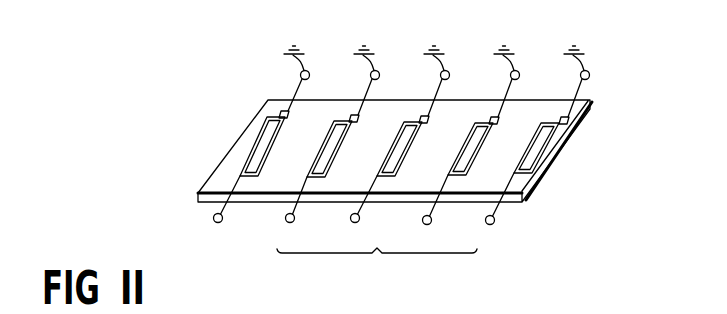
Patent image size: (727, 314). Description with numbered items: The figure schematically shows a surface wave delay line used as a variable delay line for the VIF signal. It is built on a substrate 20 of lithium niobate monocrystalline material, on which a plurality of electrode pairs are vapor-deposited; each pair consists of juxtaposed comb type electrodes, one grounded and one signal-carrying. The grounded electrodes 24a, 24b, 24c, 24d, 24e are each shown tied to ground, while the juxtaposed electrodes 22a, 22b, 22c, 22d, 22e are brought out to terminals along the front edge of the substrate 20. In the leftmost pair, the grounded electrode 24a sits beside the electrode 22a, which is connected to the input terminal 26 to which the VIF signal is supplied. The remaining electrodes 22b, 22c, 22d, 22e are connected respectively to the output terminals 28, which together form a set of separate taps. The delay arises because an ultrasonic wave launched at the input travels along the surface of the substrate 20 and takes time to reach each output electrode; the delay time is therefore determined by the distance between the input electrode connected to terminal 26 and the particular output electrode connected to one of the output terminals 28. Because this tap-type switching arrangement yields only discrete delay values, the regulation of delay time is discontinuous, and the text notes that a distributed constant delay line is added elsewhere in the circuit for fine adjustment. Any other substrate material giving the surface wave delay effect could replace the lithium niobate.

The substrate 20 is at (557, 151).
The electrode 22a is at (537, 163).
The electrode 22b is at (472, 163).
The electrode 22c is at (402, 163).
The electrode 22d is at (332, 163).
The electrode 22e is at (264, 163).
The grounded electrode 24a is at (580, 125).
The grounded electrode 24b is at (480, 123).
The grounded electrode 24c is at (410, 124).
The grounded electrode 24d is at (342, 122).
The grounded electrode 24e is at (280, 121).
The input terminal 26 is at (217, 206).
The output terminals 28 is at (390, 227).